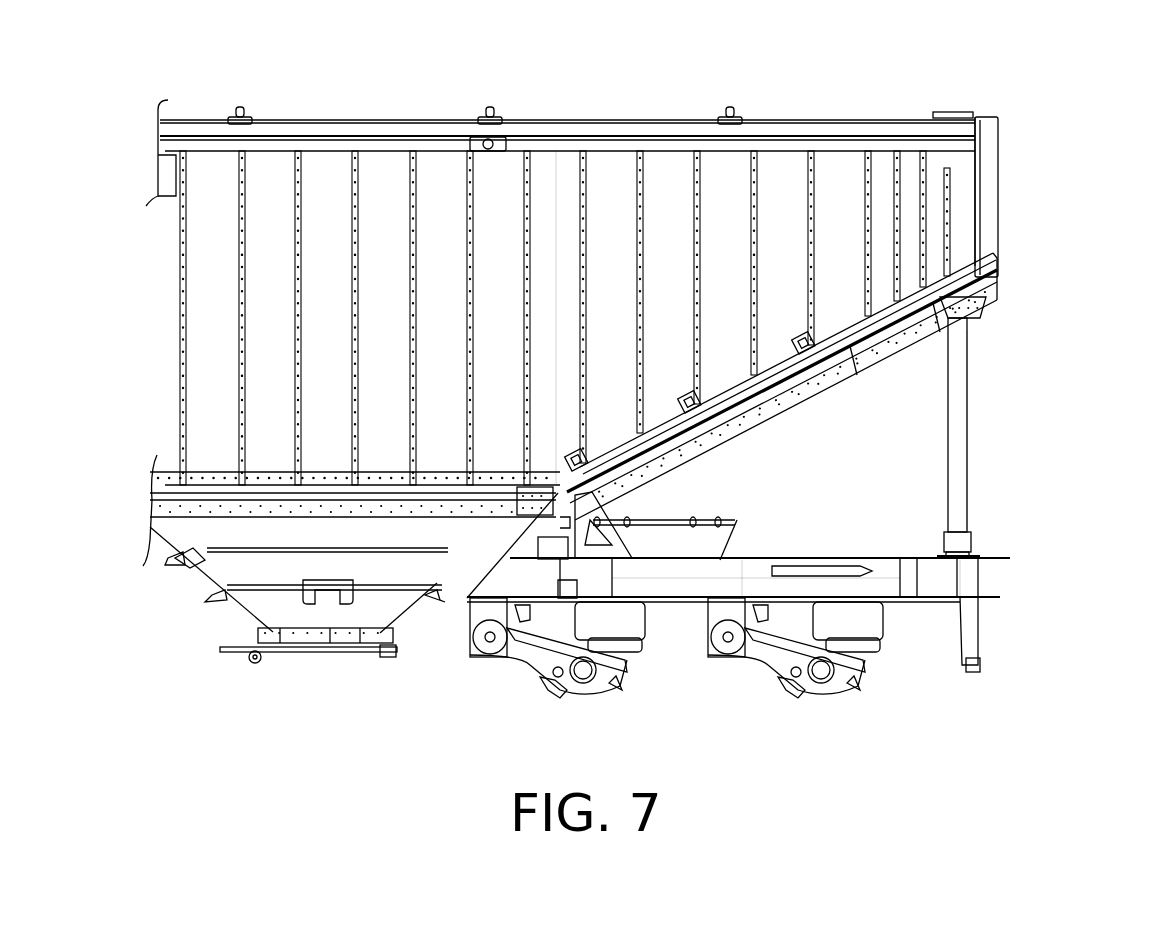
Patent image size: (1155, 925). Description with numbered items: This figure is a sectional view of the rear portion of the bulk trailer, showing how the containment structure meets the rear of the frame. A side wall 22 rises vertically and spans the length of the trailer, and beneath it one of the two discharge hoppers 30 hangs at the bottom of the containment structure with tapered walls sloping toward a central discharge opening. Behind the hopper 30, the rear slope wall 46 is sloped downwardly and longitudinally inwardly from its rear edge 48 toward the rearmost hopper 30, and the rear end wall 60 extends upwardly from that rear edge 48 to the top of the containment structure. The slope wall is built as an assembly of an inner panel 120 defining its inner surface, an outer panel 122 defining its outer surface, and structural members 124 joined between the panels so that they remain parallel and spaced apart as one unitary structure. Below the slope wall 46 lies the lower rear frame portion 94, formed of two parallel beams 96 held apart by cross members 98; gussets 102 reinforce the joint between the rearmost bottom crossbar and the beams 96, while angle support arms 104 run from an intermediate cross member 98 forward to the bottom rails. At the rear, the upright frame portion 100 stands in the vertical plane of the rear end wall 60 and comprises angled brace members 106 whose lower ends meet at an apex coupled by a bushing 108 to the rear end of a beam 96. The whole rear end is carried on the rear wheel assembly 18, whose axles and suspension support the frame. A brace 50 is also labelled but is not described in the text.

The rear wheel assembly 18 is at (796, 702).
The side wall 22 is at (454, 262).
The discharge hopper 30 is at (327, 666).
The rear slope wall 46 is at (731, 388).
The rear edge 48 is at (973, 262).
The wall brace 50 is at (556, 482).
The rear end wall 60 is at (990, 190).
The lower rear frame portion 94 is at (1058, 578).
The beam 96 is at (887, 585).
The cross member 98 is at (960, 578).
The upright frame portion 100 is at (970, 406).
The gusset 102 is at (602, 547).
The angle support arm 104 is at (650, 528).
The angled brace member 106 is at (955, 360).
The bushing 108 is at (968, 540).
The inner panel 120 is at (847, 352).
The outer panel 122 is at (820, 372).
The structural member 124 is at (782, 388).